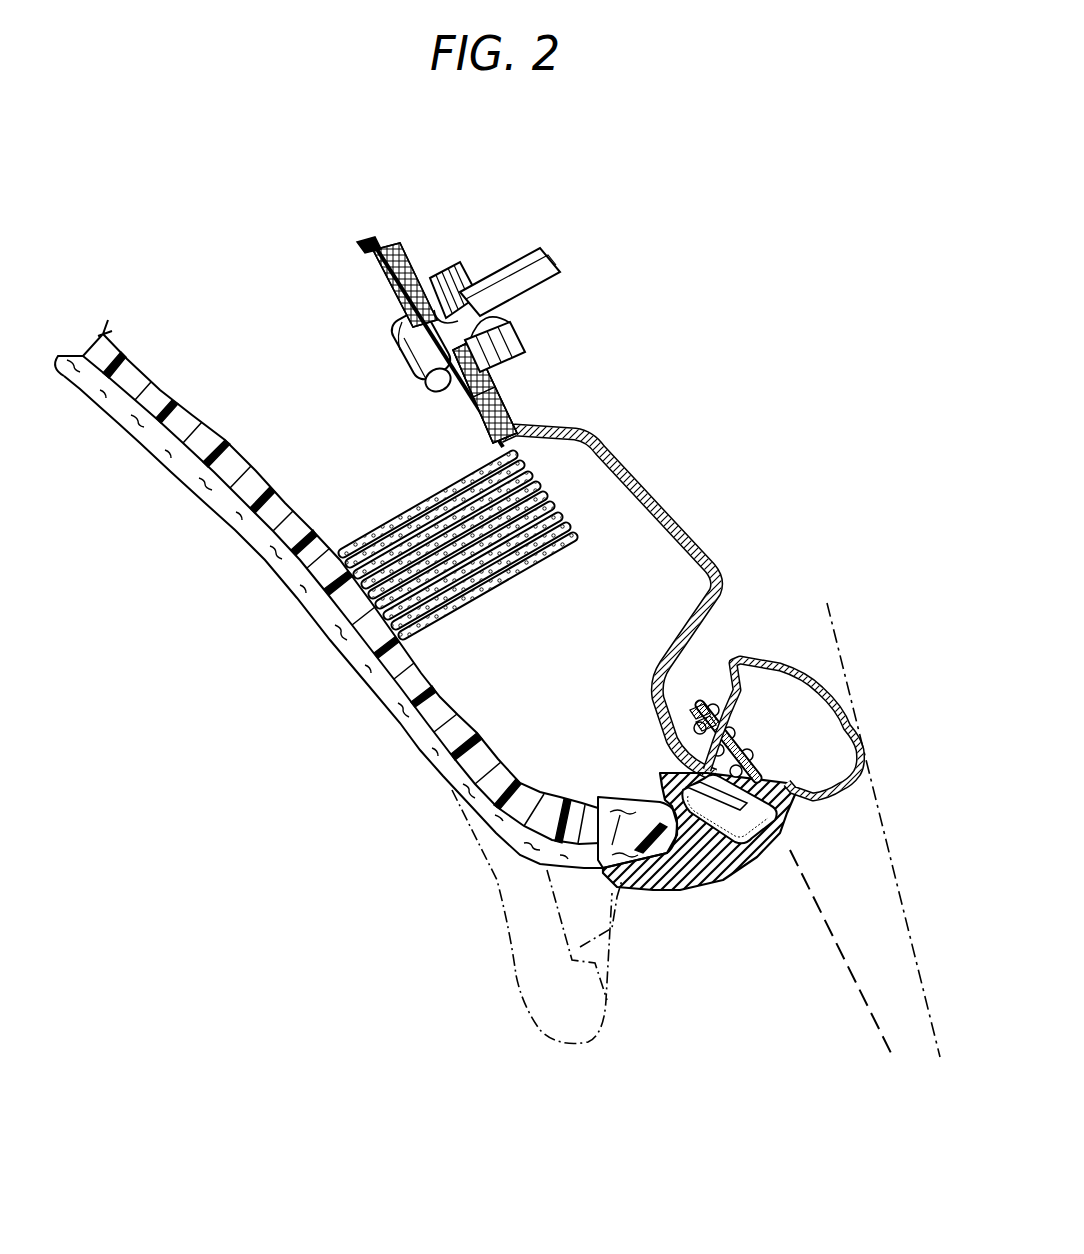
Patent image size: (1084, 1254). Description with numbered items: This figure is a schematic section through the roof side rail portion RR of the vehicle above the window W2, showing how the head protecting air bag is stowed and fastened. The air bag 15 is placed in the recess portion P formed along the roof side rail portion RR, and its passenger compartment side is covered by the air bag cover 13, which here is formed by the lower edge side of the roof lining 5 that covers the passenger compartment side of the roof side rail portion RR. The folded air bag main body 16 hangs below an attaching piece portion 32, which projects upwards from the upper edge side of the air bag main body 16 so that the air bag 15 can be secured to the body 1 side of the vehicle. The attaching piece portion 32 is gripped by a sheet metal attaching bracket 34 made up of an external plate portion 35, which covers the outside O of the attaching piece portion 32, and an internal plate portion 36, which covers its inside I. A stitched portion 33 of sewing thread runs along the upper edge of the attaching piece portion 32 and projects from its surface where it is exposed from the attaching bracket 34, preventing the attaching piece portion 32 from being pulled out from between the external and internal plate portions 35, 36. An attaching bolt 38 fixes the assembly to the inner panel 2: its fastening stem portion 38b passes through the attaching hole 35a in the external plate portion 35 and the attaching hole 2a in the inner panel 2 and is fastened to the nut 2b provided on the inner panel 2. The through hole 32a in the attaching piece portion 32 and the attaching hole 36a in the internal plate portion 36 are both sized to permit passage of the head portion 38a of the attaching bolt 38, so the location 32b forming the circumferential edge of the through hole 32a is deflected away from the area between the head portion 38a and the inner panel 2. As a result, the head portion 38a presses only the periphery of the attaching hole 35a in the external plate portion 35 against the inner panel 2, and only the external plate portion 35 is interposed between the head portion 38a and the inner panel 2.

The body 1 is at (637, 483).
The inner panel 2 is at (680, 660).
The attaching hole 2a is at (500, 317).
The nut 2b is at (455, 262).
The roof lining 5 is at (270, 517).
The air bag cover 13 is at (540, 972).
The air bag 15 is at (582, 478).
The air bag main body 16 is at (561, 570).
The attaching piece portion 32 is at (388, 313).
The through hole 32a is at (397, 310).
The location constituting circumferential edge of through hole 32b is at (477, 400).
The stitched portion 33 is at (368, 257).
The attaching bracket 34 is at (563, 382).
The external plate portion 35 is at (503, 407).
The attaching hole 35a is at (457, 267).
The internal plate portion 36 is at (500, 360).
The attaching hole 36a is at (427, 383).
The attaching bolt 38 is at (366, 370).
The head portion 38a is at (417, 357).
The fastening stem portion 38b is at (553, 270).
The roof side rail portion RR is at (350, 210).
The outside O is at (840, 497).
The inside I is at (312, 845).
The recess portion P is at (484, 636).
The window W2 is at (880, 817).